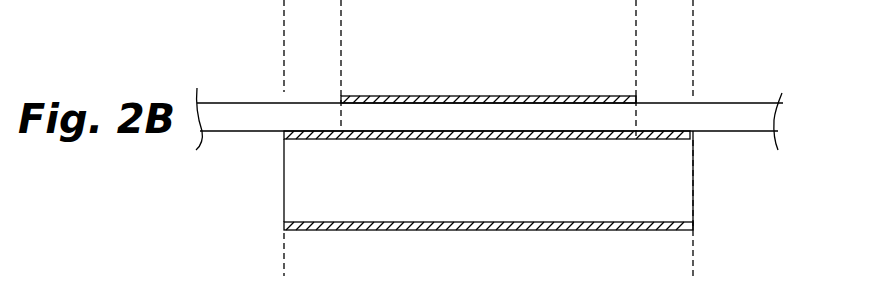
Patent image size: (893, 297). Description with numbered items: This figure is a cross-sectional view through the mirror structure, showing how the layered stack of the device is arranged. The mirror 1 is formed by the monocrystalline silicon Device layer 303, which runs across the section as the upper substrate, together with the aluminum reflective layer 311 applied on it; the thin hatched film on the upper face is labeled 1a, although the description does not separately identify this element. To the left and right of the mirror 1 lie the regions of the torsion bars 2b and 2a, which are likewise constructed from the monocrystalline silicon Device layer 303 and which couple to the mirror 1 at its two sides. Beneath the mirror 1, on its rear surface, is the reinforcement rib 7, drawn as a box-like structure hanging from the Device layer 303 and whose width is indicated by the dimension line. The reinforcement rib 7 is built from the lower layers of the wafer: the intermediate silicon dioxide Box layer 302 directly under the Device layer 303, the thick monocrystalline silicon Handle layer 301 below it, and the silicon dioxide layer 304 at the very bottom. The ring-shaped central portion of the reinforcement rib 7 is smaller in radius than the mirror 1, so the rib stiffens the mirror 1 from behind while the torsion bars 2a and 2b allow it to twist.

The mirror 1 is at (636, 40).
The functional layer 1a is at (523, 95).
The torsion bar 2a is at (636, 40).
The torsion bar 2b is at (341, 38).
The reinforcement rib 7 is at (693, 257).
The monocrystalline silicon Handle layer 301 is at (683, 190).
The intermediate silicon dioxide Box layer 302 is at (694, 138).
The monocrystalline silicon Device layer 303 is at (780, 138).
The silicon dioxide layer 304 is at (694, 230).
The aluminum reflective layer 311 is at (640, 102).